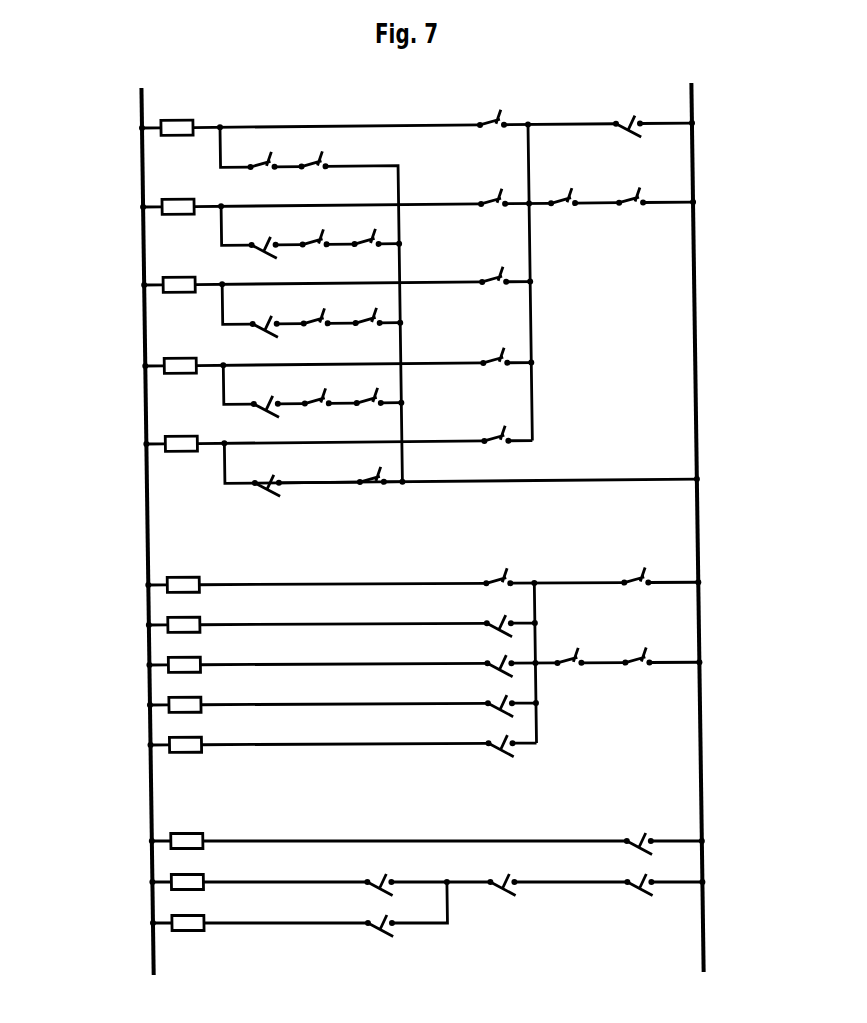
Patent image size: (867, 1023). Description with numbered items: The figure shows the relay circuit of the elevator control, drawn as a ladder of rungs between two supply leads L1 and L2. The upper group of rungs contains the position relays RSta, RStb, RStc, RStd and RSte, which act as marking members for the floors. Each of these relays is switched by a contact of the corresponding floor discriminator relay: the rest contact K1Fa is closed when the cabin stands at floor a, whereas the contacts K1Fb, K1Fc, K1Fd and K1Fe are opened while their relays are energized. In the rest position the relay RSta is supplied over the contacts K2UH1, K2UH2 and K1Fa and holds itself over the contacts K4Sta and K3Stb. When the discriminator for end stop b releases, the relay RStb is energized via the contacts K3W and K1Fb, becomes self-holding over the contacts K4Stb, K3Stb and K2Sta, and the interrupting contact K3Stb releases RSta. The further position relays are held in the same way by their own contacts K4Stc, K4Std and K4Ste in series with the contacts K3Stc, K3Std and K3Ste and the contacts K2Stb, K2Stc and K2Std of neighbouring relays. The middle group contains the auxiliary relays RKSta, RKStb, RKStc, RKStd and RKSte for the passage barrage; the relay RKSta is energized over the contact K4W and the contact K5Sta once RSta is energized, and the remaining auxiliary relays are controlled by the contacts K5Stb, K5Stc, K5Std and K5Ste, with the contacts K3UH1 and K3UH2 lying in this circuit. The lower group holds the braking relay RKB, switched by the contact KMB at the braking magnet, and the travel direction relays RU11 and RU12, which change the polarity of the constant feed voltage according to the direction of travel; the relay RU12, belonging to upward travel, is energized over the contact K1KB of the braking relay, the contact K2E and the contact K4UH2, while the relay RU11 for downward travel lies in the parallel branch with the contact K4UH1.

The supply line L1 is at (141, 96).
The supply line L2 is at (690, 91).
The position relay RSta is at (391, 300).
The position relay RStb is at (390, 219).
The position relay RStc is at (309, 298).
The position relay RStd is at (310, 379).
The position relay RSte is at (393, 458).
The auxiliary relay for passage barrage RKSta is at (396, 658).
The auxiliary relay for passage barrage RKStb is at (313, 622).
The auxiliary relay for passage barrage RKStc is at (396, 661).
The auxiliary relay for passage barrage RKStd is at (314, 702).
The auxiliary relay for passage barrage RKSte is at (314, 742).
The braking relay RKB is at (399, 840).
The travel direction relay RU11 is at (399, 881).
The travel direction relay RU12 is at (269, 907).
The rest contact of relay RFa K1Fa is at (494, 113).
The contact of relay RFb K1Fb is at (497, 191).
The contact of relay RFc K1Fc is at (497, 269).
The contact of relay RFd K1Fd is at (497, 350).
The contact of relay RFe K1Fe is at (497, 428).
The contact of travel continuation relay RW K3W is at (629, 117).
The contact of relay RUH1 K2UH1 is at (642, 190).
The contact of relay RUH2 K2UH2 is at (576, 191).
The self-holding contact of relay RSta K4Sta is at (257, 158).
The self-holding contact of relay RStb K4Stb is at (258, 236).
The self-holding contact of relay RStc K4Stc is at (257, 315).
The self-holding contact of relay RStd K4Std is at (257, 398).
The self-holding contact of relay RSte K4Ste is at (257, 480).
The interrupting contact of relay RStb K3Stb is at (327, 157).
The interrupting contact of relay RStc K3Stc is at (315, 230).
The interrupting contact of relay RStd K3Std is at (311, 309).
The interrupting contact of relay RSte K3Ste is at (314, 391).
The contact of relay RSta K2Sta is at (372, 230).
The contact of relay RStb K2Stb is at (369, 309).
The contact of relay RStc K2Stc is at (372, 391).
The contact of relay RStd K2Std is at (373, 473).
The contact of relay RSta K5Sta is at (503, 573).
The contact of relay RStb K5Stb is at (503, 620).
The contact of relay RStc K5Stc is at (503, 660).
The contact of relay RStd K5Std is at (503, 700).
The contact of relay RSte K5Ste is at (503, 740).
The contact of travel continuation relay RW K4W is at (641, 573).
The contact of relay RUH1 K3UH1 is at (644, 654).
The contact of relay RUH2 K3UH2 is at (576, 655).
The contact at the braking magnet KMB is at (640, 836).
The contact of relay RUH1 K4UH1 is at (383, 879).
The contact of relay RUH2 K4UH2 is at (383, 918).
The contact of fine adjustment relay RE K2E is at (502, 878).
The contact of braking relay RKB K1KB is at (640, 878).